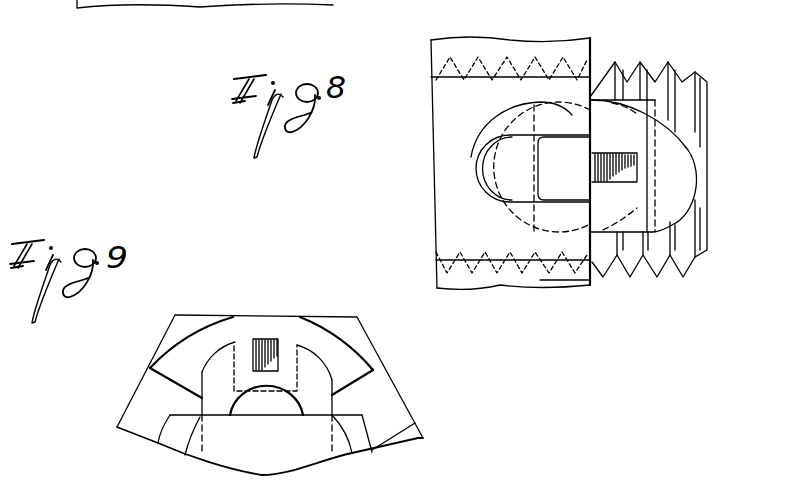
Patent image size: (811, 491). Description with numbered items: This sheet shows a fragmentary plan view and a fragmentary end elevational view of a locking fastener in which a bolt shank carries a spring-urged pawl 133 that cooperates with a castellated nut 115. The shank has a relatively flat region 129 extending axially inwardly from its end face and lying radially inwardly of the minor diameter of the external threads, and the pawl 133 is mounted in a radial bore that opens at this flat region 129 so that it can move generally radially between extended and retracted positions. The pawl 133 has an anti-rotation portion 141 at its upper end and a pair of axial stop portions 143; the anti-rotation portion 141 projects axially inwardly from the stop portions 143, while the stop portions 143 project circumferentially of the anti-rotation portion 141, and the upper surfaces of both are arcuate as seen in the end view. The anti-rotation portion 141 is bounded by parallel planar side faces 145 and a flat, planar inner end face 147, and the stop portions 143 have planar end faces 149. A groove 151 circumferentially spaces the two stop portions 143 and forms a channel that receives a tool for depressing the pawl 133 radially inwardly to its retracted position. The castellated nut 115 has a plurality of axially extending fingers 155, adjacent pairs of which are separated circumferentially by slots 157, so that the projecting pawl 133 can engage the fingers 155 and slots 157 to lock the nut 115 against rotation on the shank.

In FIG. 9, the castellated nut 115 is at (207, 316).
In FIG. 8, the flat region 129 is at (682, 181).
In FIG. 9, the pawl 133 is at (310, 405).
In FIG. 8, the anti-rotation portion 141 is at (567, 160).
In FIG. 9, the anti-rotation portion 141 is at (287, 350).
In FIG. 8, the axial stop portions 143 is at (634, 123).
In FIG. 9, the axial stop portions 143 is at (220, 380).
In FIG. 8, the side faces 145 is at (532, 107).
In FIG. 8, the inner end face 147 is at (508, 152).
In FIG. 8, the end faces 149 is at (593, 90).
In FIG. 8, the groove 151 is at (628, 168).
In FIG. 9, the groove 151 is at (273, 343).
In FIG. 8, the fingers 155 is at (550, 95).
In FIG. 9, the fingers 155 is at (177, 326).
In FIG. 8, the slots 157 is at (572, 42).
In FIG. 9, the slots 157 is at (250, 332).